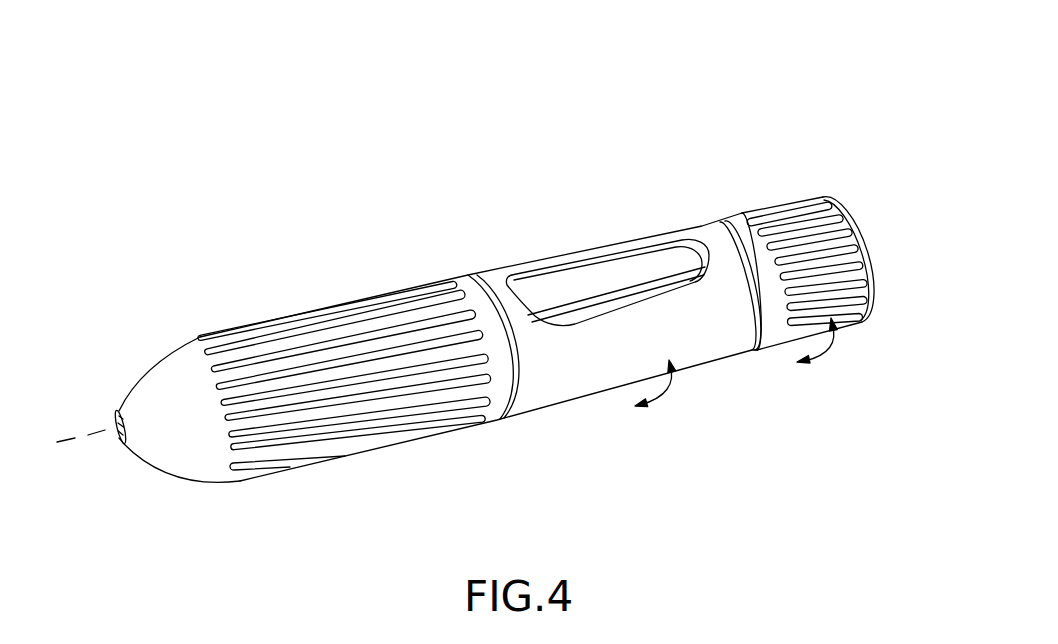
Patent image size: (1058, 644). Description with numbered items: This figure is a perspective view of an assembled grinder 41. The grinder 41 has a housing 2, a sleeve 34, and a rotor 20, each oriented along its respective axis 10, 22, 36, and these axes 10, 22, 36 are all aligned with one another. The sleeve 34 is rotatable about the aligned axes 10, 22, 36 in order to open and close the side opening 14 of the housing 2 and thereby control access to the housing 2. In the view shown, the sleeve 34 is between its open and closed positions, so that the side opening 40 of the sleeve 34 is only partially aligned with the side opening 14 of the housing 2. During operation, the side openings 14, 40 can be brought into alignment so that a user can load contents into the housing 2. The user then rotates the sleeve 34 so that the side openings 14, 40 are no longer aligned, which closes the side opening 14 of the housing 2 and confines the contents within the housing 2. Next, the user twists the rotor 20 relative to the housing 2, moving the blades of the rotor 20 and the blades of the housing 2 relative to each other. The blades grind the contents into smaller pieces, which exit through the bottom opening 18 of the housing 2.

The grinder 41 is at (363, 91).
The housing 2 is at (296, 309).
The bottom opening 18 is at (119, 425).
The sleeve 34 is at (501, 265).
The side opening 14 is at (678, 291).
The side opening 40 is at (600, 276).
The rotor 20 is at (767, 207).
The axis 10 is at (915, 245).
The axis 22 is at (817, 340).
The axis 36 is at (655, 383).